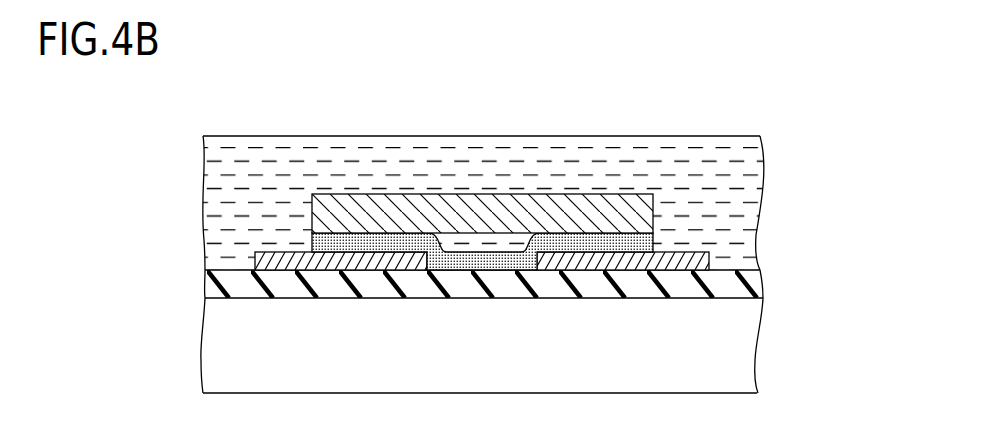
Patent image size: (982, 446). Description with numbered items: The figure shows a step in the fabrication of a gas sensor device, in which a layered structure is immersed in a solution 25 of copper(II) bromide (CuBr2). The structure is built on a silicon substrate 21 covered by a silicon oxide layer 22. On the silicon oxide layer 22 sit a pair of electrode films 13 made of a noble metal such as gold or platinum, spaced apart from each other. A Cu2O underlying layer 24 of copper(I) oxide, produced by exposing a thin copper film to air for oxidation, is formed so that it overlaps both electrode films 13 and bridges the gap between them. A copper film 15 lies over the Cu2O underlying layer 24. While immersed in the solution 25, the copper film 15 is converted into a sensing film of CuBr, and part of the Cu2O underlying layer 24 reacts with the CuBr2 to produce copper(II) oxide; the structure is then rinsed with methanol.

The electrode films 13 is at (258, 255).
The copper film 15 is at (623, 200).
The silicon substrate 21 is at (745, 345).
The silicon oxide layer 22 is at (745, 282).
The Cu2O underlying layer 24 is at (650, 243).
The solution of copper(II) bromide 25 is at (558, 153).